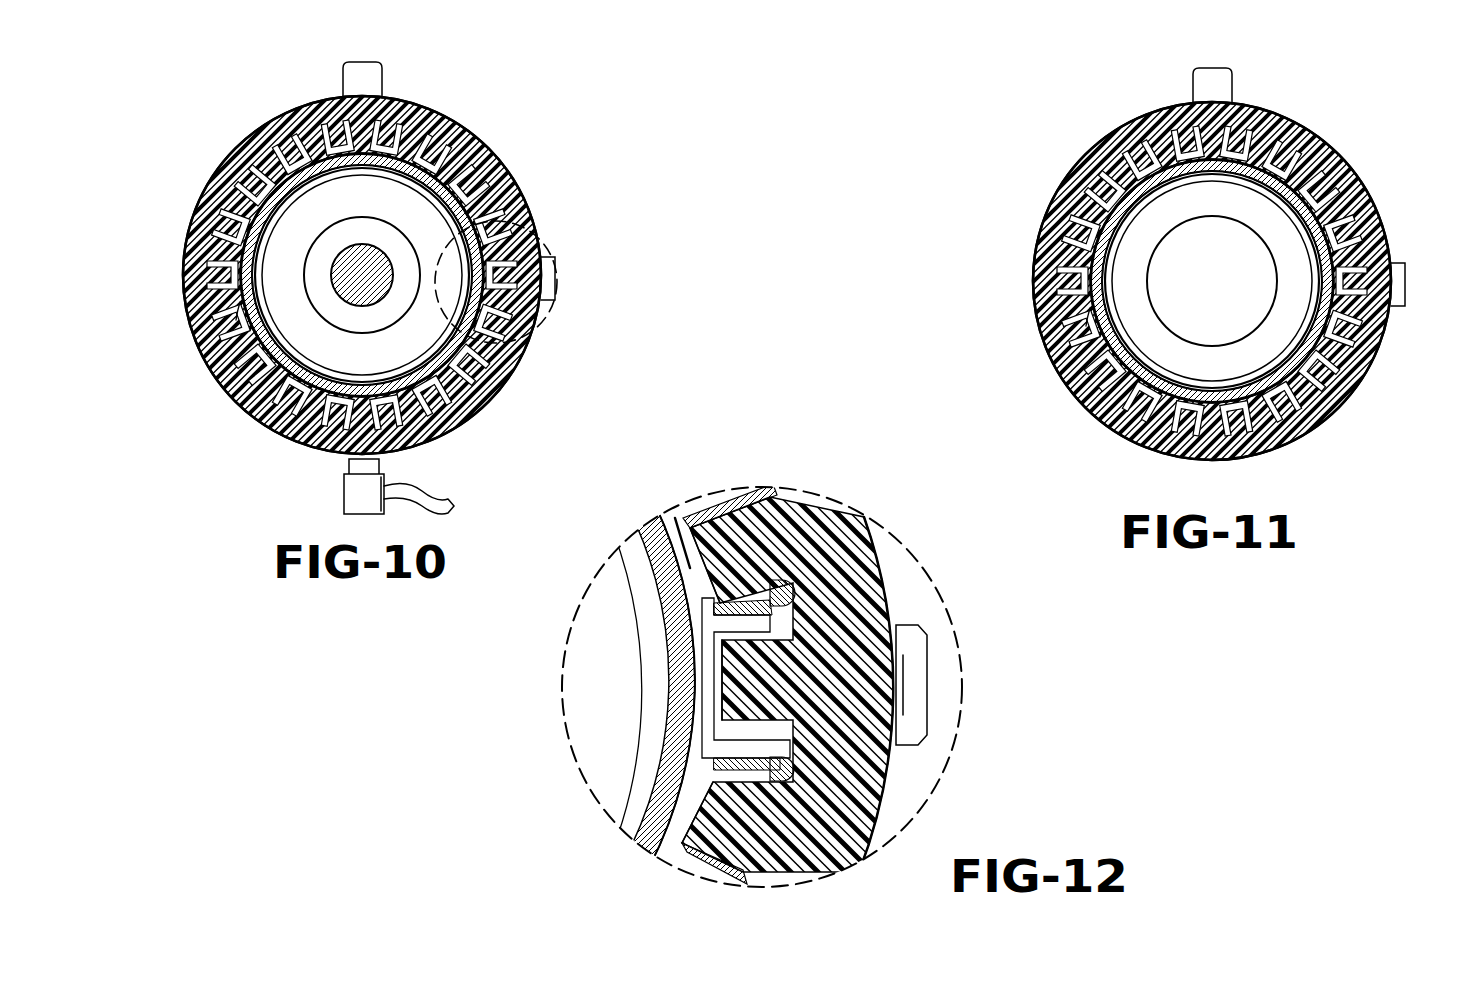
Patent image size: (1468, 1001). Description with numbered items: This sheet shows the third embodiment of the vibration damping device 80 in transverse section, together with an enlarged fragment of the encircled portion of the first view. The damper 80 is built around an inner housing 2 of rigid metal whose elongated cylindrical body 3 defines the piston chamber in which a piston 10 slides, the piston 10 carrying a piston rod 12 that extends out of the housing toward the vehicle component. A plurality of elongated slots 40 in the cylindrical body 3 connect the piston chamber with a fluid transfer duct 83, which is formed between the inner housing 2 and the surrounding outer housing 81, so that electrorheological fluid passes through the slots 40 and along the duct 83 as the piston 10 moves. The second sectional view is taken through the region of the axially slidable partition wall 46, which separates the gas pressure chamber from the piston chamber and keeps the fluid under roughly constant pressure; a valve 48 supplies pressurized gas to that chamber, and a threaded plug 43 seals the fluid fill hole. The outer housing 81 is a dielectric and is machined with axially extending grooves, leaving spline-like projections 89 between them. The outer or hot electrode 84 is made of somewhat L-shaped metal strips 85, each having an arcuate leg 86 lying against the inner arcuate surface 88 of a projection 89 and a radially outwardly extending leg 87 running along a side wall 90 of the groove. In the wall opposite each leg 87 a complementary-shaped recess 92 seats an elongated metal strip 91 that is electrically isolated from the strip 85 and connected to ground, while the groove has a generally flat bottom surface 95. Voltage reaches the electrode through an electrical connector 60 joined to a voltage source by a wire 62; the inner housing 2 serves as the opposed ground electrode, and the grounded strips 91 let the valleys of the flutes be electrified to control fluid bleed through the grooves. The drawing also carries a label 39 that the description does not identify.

In FIG. 10, the vibration damping device 80 is at (504, 100).
In FIG. 11, the vibration damping device 80 is at (1250, 260).
In FIG. 10, the outer housing 81 is at (514, 155).
In FIG. 11, the outer housing 81 is at (1242, 281).
In FIG. 12, the outer housing 81 is at (887, 552).
In FIG. 10, the spline-like projections 89 is at (302, 162).
In FIG. 11, the spline-like projections 89 is at (1193, 281).
In FIG. 12, the spline-like projections 89 is at (730, 557).
In FIG. 10, the inner housing 2 is at (258, 198).
In FIG. 11, the inner housing 2 is at (1168, 281).
In FIG. 12, the inner housing 2 is at (678, 698).
In FIG. 10, the cylindrical body 3 is at (254, 248).
In FIG. 11, the cylindrical body 3 is at (1155, 281).
In FIG. 12, the cylindrical body 3 is at (676, 736).
In FIG. 10, the outer electrode 84 is at (238, 328).
In FIG. 11, the outer electrode 84 is at (1028, 323).
In FIG. 12, the outer electrode 84 is at (692, 554).
In FIG. 10, the valve 48 is at (384, 77).
In FIG. 11, the valve 48 is at (1239, 67).
In FIG. 10, the threaded plug 43 is at (556, 262).
In FIG. 11, the threaded plug 43 is at (1428, 260).
In FIG. 12, the threaded plug 43 is at (930, 683).
In FIG. 10, the piston 10 is at (434, 334).
In FIG. 10, the piston rod 12 is at (380, 307).
In FIG. 10, the electrical connector 60 is at (344, 492).
In FIG. 10, the wire 62 is at (443, 500).
In FIG. 11, the elongated slots 40 is at (1314, 286).
In FIG. 11, the partition wall 46 is at (1282, 350).
In FIG. 11, the rotor body 39 is at (1240, 296).
In FIG. 12, the metal strips 91 is at (720, 500).
In FIG. 12, the recess 92 is at (740, 492).
In FIG. 12, the flat bottom surfaces 95 is at (775, 596).
In FIG. 12, the fluid transfer duct 83 is at (790, 646).
In FIG. 12, the L-shaped metal strips 85 is at (702, 592).
In FIG. 12, the inner arcuate surface 88 is at (725, 680).
In FIG. 12, the arcuate leg 86 is at (700, 583).
In FIG. 12, the radially outwardly extending leg 87 is at (693, 870).
In FIG. 12, the side wall 90 is at (720, 870).